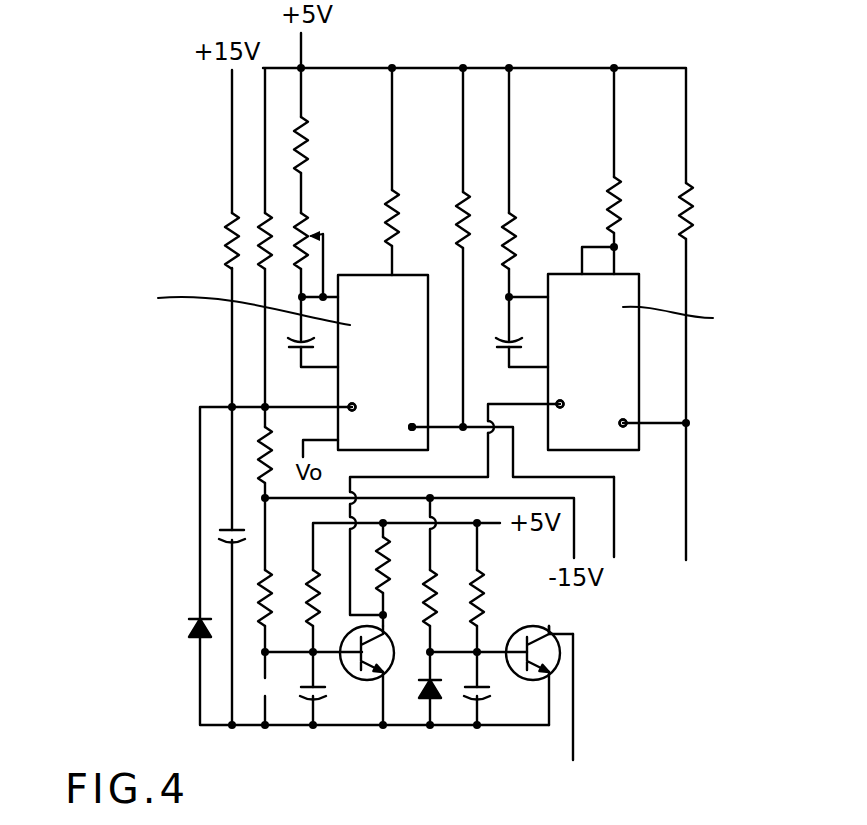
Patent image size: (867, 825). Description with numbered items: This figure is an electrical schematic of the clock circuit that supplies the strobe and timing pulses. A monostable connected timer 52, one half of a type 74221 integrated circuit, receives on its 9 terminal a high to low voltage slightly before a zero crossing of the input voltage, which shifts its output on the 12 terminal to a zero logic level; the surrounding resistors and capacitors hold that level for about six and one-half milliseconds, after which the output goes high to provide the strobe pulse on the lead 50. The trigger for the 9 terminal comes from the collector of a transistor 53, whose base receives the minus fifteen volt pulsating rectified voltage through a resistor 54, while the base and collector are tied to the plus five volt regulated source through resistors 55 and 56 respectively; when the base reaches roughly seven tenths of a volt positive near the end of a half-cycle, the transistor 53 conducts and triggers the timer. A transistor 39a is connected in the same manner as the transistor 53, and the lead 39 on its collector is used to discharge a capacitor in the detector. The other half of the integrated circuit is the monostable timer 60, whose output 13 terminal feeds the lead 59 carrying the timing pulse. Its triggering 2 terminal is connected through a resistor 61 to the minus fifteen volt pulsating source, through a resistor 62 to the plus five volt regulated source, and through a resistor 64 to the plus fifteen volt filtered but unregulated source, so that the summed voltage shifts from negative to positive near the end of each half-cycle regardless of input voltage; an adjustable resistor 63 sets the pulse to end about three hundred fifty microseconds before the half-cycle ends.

The resistor 62 is at (262, 222).
The resistor 64 is at (228, 239).
The resistor 63 is at (323, 234).
The resistor 61 is at (273, 447).
The monostable timer 60 is at (364, 345).
The monostable connected timer 52 is at (579, 345).
The triggering terminal 2 is at (365, 407).
The output terminal 13 is at (398, 427).
The 9 terminal 9 is at (571, 404).
The 12 terminal 12 is at (606, 425).
The resistor 54 is at (278, 588).
The resistor 55 is at (311, 602).
The resistor 56 is at (395, 567).
The transistor 53 is at (356, 681).
The transistor 39a is at (538, 627).
The lead 39 is at (573, 705).
The lead 59 is at (616, 507).
The lead 50 is at (689, 507).